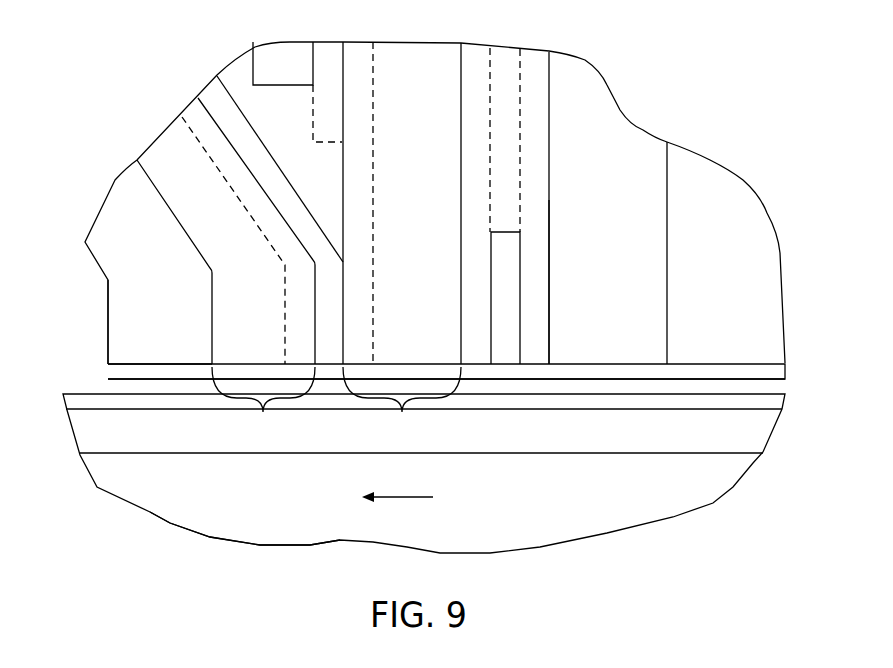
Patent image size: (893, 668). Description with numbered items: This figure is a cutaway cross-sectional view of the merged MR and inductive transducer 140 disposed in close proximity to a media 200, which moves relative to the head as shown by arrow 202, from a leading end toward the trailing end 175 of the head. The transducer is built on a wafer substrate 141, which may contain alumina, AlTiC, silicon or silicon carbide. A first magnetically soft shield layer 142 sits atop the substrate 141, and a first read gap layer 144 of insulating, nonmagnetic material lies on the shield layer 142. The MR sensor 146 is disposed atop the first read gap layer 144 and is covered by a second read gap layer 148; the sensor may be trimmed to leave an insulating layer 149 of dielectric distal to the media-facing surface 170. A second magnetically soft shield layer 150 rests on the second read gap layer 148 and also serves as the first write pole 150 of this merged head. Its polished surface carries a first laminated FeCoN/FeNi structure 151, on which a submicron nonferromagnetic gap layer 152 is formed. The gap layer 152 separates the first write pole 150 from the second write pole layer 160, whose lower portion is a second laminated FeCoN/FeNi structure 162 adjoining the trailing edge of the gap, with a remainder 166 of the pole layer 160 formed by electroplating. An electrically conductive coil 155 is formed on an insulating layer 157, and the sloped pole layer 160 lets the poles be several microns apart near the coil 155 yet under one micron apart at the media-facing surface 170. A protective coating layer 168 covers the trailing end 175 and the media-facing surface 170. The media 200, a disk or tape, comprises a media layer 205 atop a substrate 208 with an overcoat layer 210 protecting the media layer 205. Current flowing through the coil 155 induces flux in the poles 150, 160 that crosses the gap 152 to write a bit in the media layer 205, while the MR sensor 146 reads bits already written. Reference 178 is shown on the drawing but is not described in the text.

The merged MR and inductive transducer 140 is at (196, 58).
The wafer substrate 141 is at (733, 315).
The first magnetically soft shield layer 142 is at (626, 243).
The first read gap layer 144 is at (540, 290).
The MR sensor 146 is at (500, 278).
The second read gap layer 148 is at (461, 214).
The insulating layer 149 is at (515, 140).
The second magnetically soft shield layer / first write pole 150 is at (402, 405).
The first laminated FeCoN/FeNi structure 151 is at (357, 157).
The nonferromagnetic gap layer 152 is at (343, 333).
The electrically conductive coil 155 is at (283, 87).
The insulating layer 157 is at (328, 145).
The second write pole layer 160 is at (263, 406).
The second laminated FeCoN/FeNi structure 162 is at (290, 325).
The remainder of pole layer 166 is at (220, 215).
The protective coating layer 168 is at (183, 276).
The media-facing surface 170 is at (565, 388).
The trailing end 175 is at (104, 323).
The bottom surface 178 is at (165, 364).
The media 200 is at (180, 558).
The arrow 202 is at (398, 500).
The media layer 205 is at (432, 454).
The substrate 208 is at (258, 498).
The overcoat layer 210 is at (162, 410).